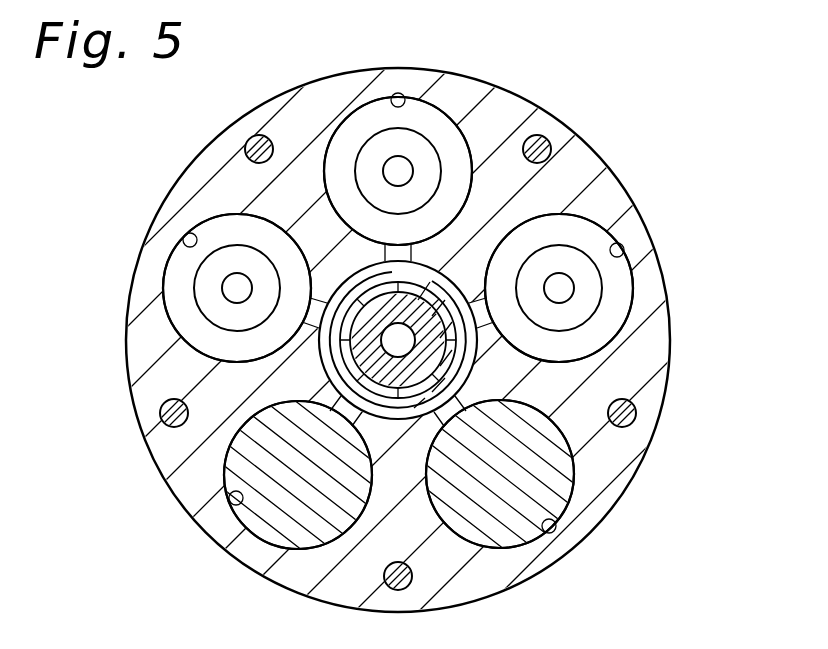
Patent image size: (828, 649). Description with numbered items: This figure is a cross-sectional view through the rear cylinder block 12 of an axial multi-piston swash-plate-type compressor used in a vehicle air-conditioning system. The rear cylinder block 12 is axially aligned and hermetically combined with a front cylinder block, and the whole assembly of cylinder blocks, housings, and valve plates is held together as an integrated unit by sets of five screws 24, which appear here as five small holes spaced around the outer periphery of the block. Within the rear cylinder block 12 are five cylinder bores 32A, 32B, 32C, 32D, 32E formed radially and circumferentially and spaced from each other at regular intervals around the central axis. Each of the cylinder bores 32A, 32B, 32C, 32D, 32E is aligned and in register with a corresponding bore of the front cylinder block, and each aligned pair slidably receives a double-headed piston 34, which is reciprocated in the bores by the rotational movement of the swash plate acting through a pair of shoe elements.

The rear cylinder block 12 is at (640, 190).
The screws 24 is at (255, 137).
The cylinder bore 32A is at (398, 95).
The cylinder bore 32B is at (185, 238).
The cylinder bore 32C is at (238, 502).
The cylinder bore 32D is at (552, 532).
The cylinder bore 32E is at (622, 250).
The double-headed piston 34 is at (447, 135).